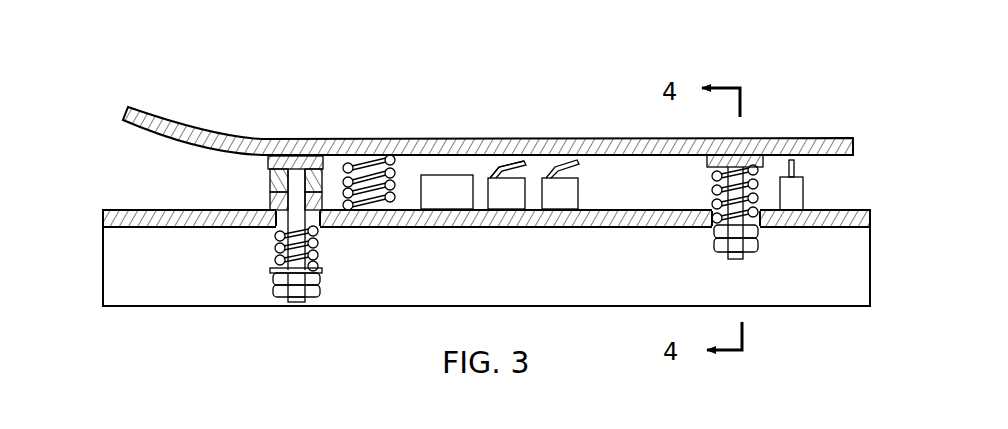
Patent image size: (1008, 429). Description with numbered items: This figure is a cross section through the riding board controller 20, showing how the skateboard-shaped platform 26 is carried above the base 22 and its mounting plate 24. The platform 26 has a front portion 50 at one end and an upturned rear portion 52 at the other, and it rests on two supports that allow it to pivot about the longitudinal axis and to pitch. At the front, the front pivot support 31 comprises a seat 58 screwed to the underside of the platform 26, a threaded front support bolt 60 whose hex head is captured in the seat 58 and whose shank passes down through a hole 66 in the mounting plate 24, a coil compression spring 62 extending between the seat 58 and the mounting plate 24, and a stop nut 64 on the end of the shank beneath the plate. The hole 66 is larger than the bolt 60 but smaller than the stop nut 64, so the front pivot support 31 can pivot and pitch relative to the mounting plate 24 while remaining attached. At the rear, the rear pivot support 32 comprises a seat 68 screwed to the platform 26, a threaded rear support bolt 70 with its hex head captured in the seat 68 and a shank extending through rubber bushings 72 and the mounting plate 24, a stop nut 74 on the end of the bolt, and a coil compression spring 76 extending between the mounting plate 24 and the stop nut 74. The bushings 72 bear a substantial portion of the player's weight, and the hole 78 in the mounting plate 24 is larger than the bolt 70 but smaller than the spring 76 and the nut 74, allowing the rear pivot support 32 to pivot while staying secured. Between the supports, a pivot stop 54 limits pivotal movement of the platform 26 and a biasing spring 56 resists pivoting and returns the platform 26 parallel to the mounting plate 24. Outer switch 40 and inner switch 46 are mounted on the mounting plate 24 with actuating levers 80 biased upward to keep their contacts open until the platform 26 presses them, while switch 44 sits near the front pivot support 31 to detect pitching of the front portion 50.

The riding board controller 20 is at (489, 123).
The base 22 is at (457, 258).
The mounting plate 24 is at (457, 239).
The platform 26 is at (489, 162).
The front pivot support 31 is at (739, 225).
The rear pivot support 32 is at (290, 257).
The outer switch 40 is at (560, 209).
The switch 44 is at (803, 187).
The inner switch 46 is at (508, 209).
The front portion 50 is at (440, 140).
The rear portion 52 is at (489, 171).
The pivot stop 54 is at (448, 209).
The biasing spring 56 is at (392, 208).
The seat 58 is at (760, 154).
The front support bolt 60 is at (702, 263).
The coil compression spring 62 is at (710, 193).
The stop nut 64 is at (727, 254).
The hole 66 is at (790, 244).
The seat 68 is at (308, 168).
The rear support bolt 70 is at (290, 262).
The rubber bushings 72 is at (200, 182).
The stop nut 74 is at (272, 300).
The coil compression spring 76 is at (320, 260).
The hole 78 is at (486, 239).
The actuating lever 80 is at (572, 160).